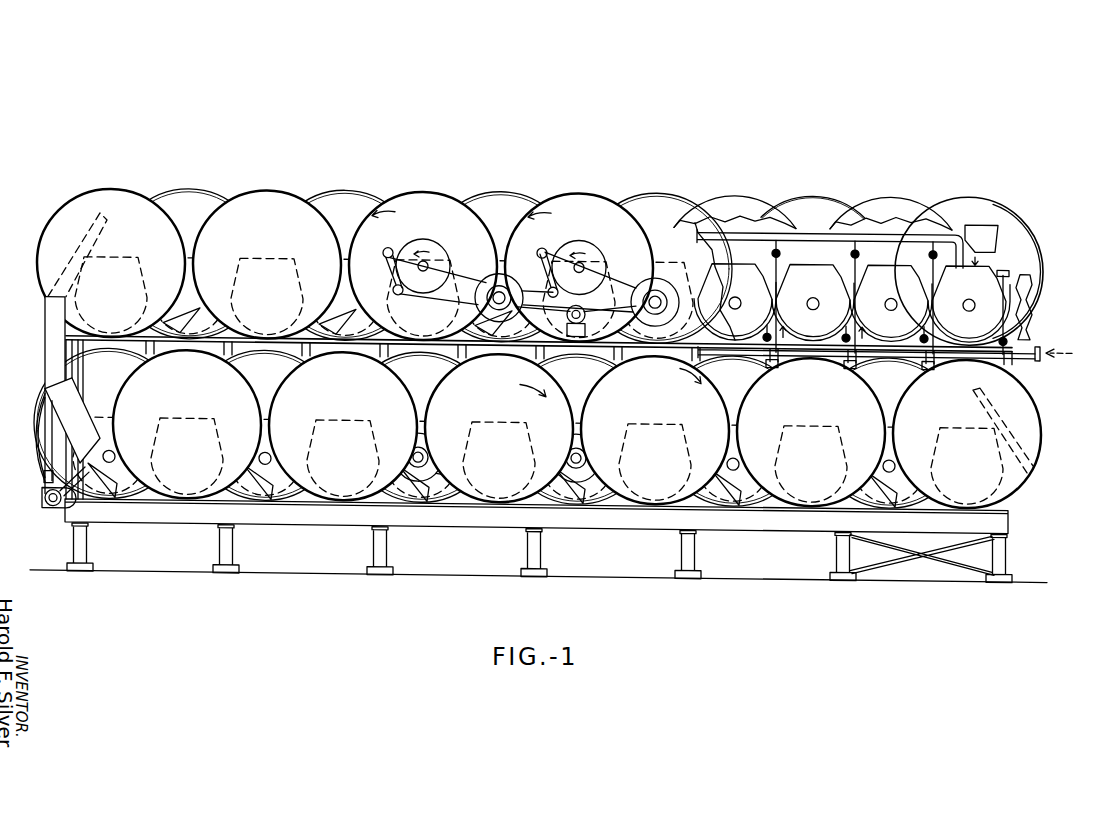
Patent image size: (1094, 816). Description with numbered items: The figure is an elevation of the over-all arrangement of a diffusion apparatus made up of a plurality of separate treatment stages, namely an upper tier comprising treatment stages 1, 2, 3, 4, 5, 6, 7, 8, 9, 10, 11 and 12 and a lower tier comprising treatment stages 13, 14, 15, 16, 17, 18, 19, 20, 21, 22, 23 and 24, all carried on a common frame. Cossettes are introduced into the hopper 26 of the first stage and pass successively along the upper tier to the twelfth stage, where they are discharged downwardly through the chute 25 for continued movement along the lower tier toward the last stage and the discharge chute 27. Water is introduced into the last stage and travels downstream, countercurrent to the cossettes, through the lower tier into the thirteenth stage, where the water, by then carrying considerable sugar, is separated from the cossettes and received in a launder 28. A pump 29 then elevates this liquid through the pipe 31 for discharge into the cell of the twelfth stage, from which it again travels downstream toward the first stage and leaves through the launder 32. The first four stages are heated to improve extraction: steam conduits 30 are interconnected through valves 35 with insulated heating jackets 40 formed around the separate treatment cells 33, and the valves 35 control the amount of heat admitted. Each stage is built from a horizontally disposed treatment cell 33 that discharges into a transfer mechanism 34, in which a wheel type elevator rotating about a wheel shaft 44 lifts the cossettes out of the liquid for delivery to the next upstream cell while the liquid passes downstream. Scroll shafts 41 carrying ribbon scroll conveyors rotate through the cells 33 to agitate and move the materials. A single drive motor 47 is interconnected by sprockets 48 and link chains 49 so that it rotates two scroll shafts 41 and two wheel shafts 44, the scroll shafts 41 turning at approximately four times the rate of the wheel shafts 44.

The treatment stage No. 1 is at (981, 190).
The treatment stage No. 2 is at (900, 189).
The treatment stage No. 3 is at (822, 189).
The treatment stage No. 4 is at (744, 189).
The treatment stage No. 5 is at (666, 189).
The treatment stage No. 6 is at (588, 189).
The treatment stage No. 7 is at (510, 189).
The treatment stage No. 8 is at (432, 189).
The treatment stage No. 9 is at (354, 189).
The treatment stage No. 10 is at (276, 189).
The treatment stage No. 11 is at (198, 189).
The treatment stage No. 12 is at (120, 189).
The treatment stage No. 13 is at (111, 484).
The treatment stage No. 14 is at (197, 484).
The treatment stage No. 15 is at (269, 484).
The treatment stage No. 16 is at (344, 484).
The treatment stage No. 17 is at (419, 484).
The treatment stage No. 18 is at (501, 484).
The treatment stage No. 19 is at (579, 484).
The treatment stage No. 20 is at (654, 484).
The treatment stage No. 21 is at (729, 484).
The treatment stage No. 22 is at (801, 484).
The treatment stage No. 23 is at (890, 484).
The treatment stage No. 24 is at (959, 484).
The chute 25 is at (52, 352).
The hopper 26 is at (995, 228).
The discharge chute 27 is at (1042, 457).
The launder 28 is at (44, 483).
The pump 29 is at (47, 505).
The steam conduits 30 is at (1022, 347).
The pipe 31 is at (44, 416).
The launder 32 is at (1020, 307).
The treatment cells 33 is at (828, 312).
The transfer mechanisms 34 is at (1028, 248).
The valves 35 is at (777, 244).
The insulated heating jackets 40 is at (753, 338).
The shafts 41 is at (584, 421).
The wheel shafts 44 is at (426, 260).
The drive motor 47 is at (512, 487).
The sprockets 48 is at (412, 236).
The link chains 49 is at (480, 280).